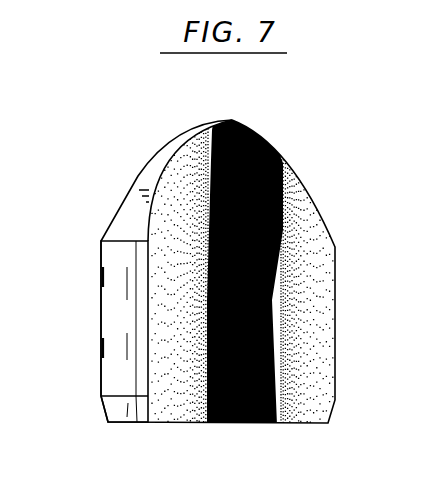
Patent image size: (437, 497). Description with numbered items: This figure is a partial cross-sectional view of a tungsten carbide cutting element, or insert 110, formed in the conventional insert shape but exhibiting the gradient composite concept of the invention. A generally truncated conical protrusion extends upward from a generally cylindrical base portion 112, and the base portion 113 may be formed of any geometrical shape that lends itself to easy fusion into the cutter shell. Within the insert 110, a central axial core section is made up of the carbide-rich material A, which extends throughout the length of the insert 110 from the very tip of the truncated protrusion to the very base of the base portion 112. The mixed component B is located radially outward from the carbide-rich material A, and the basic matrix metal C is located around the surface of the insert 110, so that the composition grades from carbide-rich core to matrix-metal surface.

The insert 110 is at (203, 126).
The base portion 112 is at (133, 193).
The base portion 113 is at (101, 327).
The carbide-rich material A is at (247, 124).
The mixed component B is at (287, 163).
The basic matrix metal C is at (327, 258).